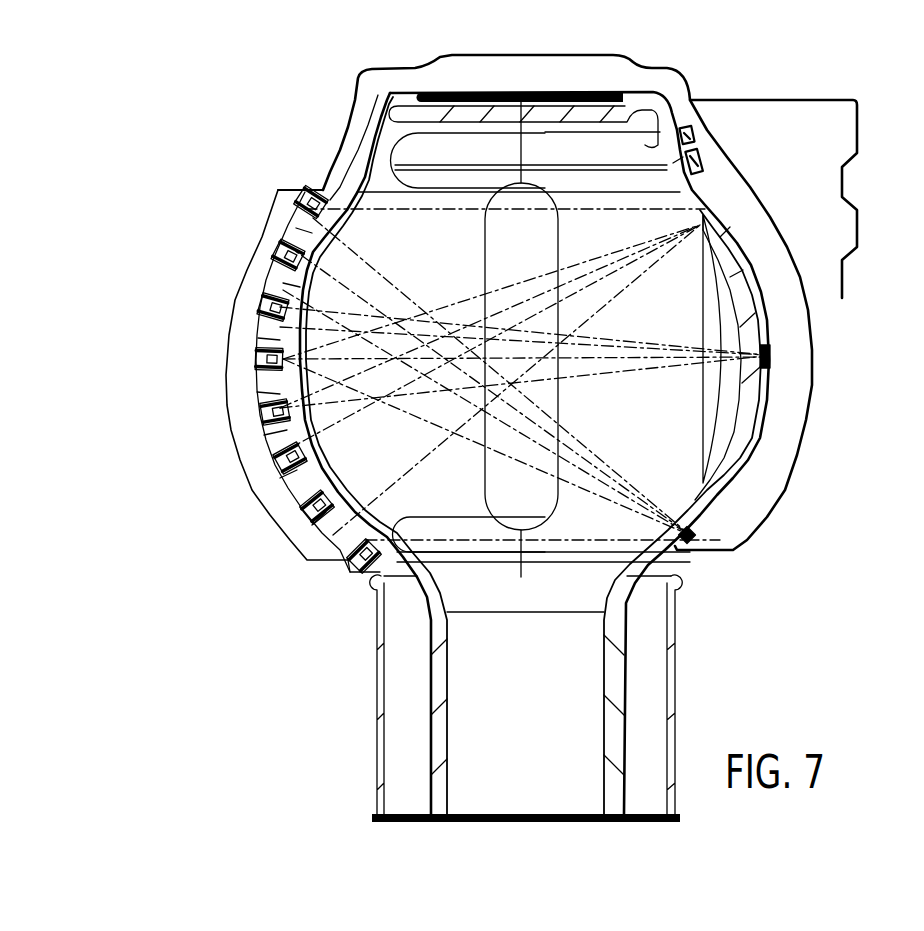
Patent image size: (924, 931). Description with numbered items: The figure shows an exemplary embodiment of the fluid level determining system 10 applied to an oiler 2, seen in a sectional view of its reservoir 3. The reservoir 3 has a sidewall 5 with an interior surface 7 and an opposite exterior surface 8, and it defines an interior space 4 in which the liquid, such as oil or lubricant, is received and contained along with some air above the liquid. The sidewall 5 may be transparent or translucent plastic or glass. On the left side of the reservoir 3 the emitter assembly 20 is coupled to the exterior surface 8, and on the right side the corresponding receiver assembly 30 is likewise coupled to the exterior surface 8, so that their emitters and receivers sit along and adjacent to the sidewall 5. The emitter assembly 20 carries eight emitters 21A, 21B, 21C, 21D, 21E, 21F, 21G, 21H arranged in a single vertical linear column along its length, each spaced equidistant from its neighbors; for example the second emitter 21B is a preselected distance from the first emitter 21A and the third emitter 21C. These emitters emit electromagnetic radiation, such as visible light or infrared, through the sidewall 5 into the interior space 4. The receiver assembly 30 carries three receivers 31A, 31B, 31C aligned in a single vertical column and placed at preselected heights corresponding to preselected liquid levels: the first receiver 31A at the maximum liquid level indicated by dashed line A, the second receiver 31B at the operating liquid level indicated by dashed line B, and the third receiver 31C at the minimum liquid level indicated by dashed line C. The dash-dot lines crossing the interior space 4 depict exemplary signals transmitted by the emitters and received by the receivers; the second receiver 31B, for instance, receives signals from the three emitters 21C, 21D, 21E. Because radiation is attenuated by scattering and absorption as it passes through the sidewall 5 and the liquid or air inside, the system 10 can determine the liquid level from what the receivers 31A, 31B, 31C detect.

The fluid level determining system 10 is at (304, 82).
The oiler 2 is at (350, 729).
The reservoir 3 is at (410, 590).
The interior space 4 is at (573, 508).
The sidewall 5 is at (372, 137).
The interior surface 7 is at (653, 145).
The exterior surface 8 is at (343, 158).
The emitter assembly 20 is at (257, 383).
The first emitter 21A is at (303, 203).
The second emitter 21B is at (280, 252).
The third emitter 21C is at (266, 305).
The fourth emitter 21D is at (262, 360).
The fifth emitter 21E is at (265, 412).
The sixth emitter 21F is at (287, 463).
The seventh emitter 21G is at (317, 505).
The eighth emitter 21H is at (357, 553).
The receiver assembly 30 is at (745, 248).
The first receiver 31A is at (712, 200).
The second receiver 31B is at (772, 353).
The third receiver 31C is at (697, 545).
The liquid level line A is at (443, 212).
The liquid level line B is at (586, 360).
The liquid level line C is at (472, 540).